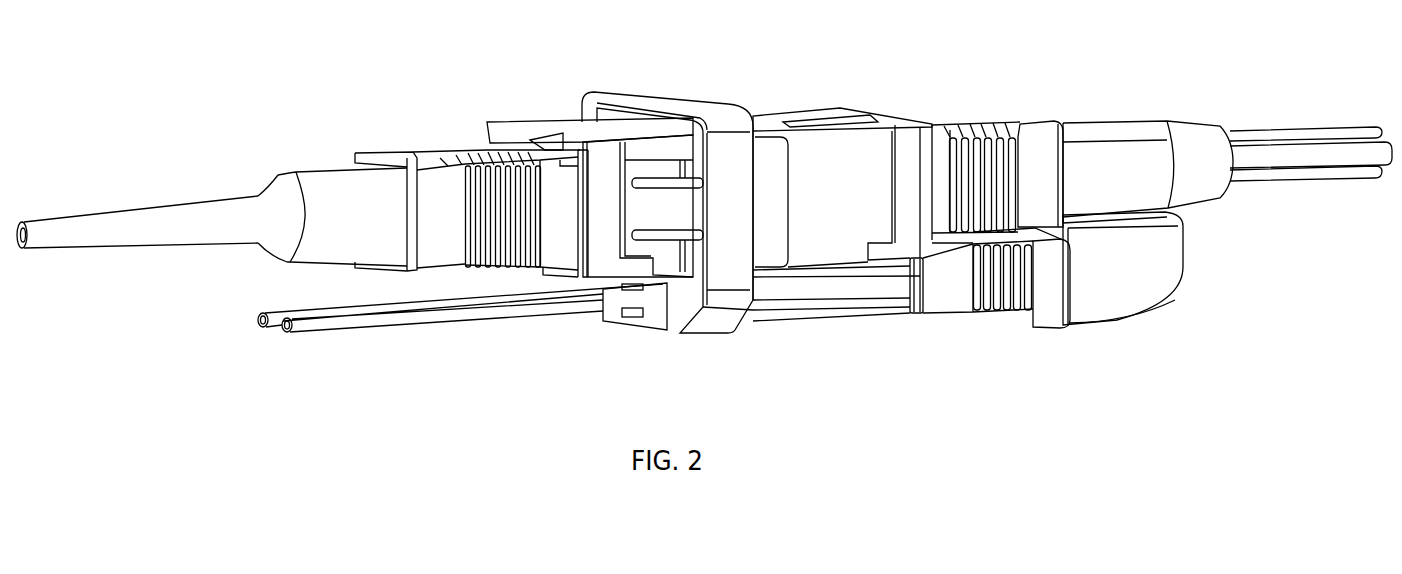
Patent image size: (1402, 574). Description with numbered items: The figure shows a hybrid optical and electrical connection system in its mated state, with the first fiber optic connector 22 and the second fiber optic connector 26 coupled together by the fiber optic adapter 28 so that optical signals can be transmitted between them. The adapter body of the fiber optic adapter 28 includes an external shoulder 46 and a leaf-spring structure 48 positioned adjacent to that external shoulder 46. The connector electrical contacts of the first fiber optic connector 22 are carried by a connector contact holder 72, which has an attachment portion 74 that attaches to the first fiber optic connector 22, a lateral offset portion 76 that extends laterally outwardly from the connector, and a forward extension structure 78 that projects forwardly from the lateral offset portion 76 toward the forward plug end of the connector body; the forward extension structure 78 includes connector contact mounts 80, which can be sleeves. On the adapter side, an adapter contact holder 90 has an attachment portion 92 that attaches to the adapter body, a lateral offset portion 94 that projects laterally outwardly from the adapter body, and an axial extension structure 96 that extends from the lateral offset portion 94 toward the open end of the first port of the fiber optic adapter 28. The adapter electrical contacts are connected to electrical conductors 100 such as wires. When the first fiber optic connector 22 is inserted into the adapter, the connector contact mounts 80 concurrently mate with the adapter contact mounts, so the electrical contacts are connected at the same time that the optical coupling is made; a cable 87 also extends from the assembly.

The first fiber optic connector 22 is at (947, 118).
The second fiber optic connector 26 is at (393, 152).
The fiber optic adapter 28 is at (803, 110).
The external shoulder 46 is at (790, 217).
The leaf-spring structure 48 is at (667, 208).
The connector contact holder 72 is at (1107, 330).
The attachment portion 74 is at (1093, 125).
The lateral offset portion 76 is at (1185, 252).
The forward extension structure 78 is at (940, 288).
The connector contact mounts 80 is at (872, 320).
The cable 87 is at (1313, 127).
The adapter contact holder 90 is at (613, 88).
The attachment portion 92 is at (650, 92).
The lateral offset portion 94 is at (688, 300).
The axial extension structure 96 is at (765, 300).
The electrical conductors 100 is at (328, 330).